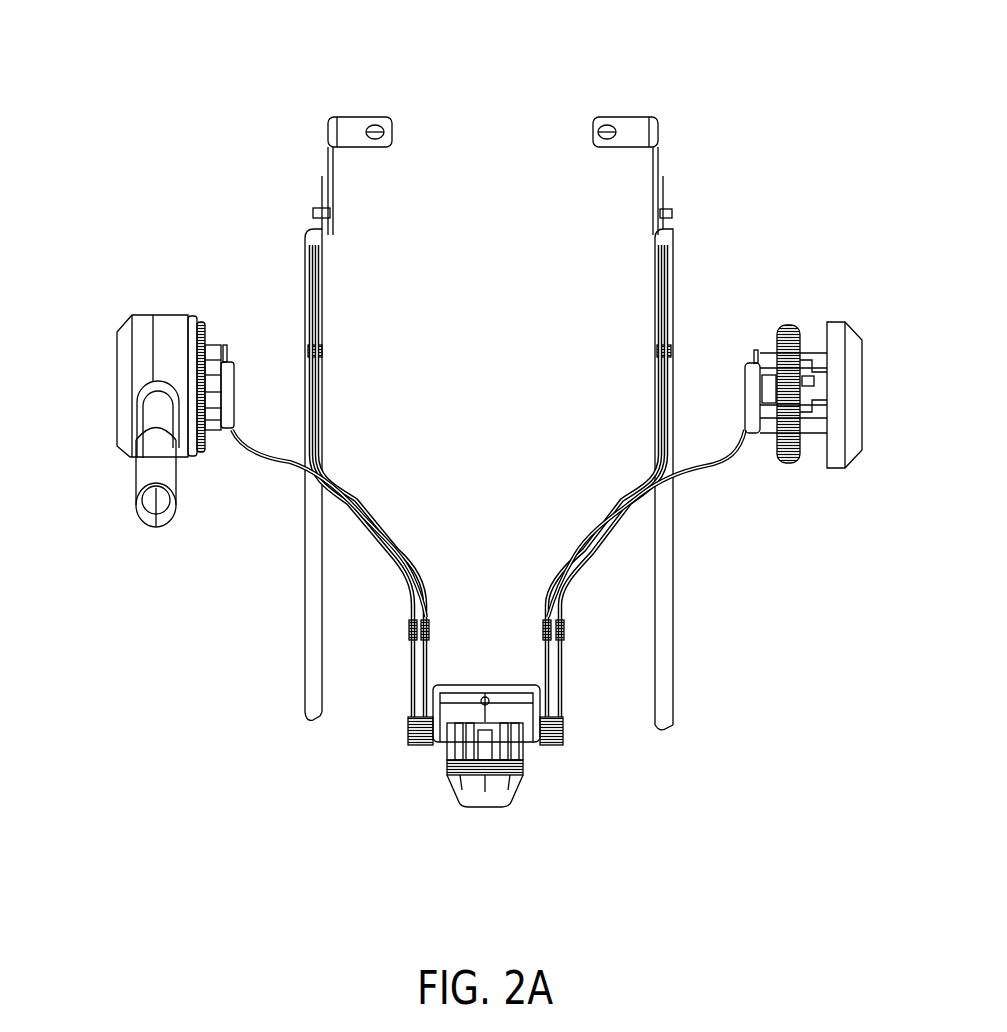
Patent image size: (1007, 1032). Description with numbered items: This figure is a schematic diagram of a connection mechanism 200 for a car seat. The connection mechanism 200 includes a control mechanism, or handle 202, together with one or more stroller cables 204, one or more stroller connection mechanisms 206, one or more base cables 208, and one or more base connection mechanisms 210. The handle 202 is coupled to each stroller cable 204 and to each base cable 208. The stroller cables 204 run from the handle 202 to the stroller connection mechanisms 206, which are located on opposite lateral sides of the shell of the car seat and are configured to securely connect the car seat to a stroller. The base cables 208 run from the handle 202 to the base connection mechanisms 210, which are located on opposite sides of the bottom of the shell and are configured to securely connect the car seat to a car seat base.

The connection mechanism 200 is at (704, 805).
The control mechanism (handle) 202 is at (415, 747).
The stroller cable 204 is at (388, 580).
The stroller connection mechanism 206 is at (123, 368).
The base cable 208 is at (580, 560).
The base connection mechanism 210 is at (633, 135).